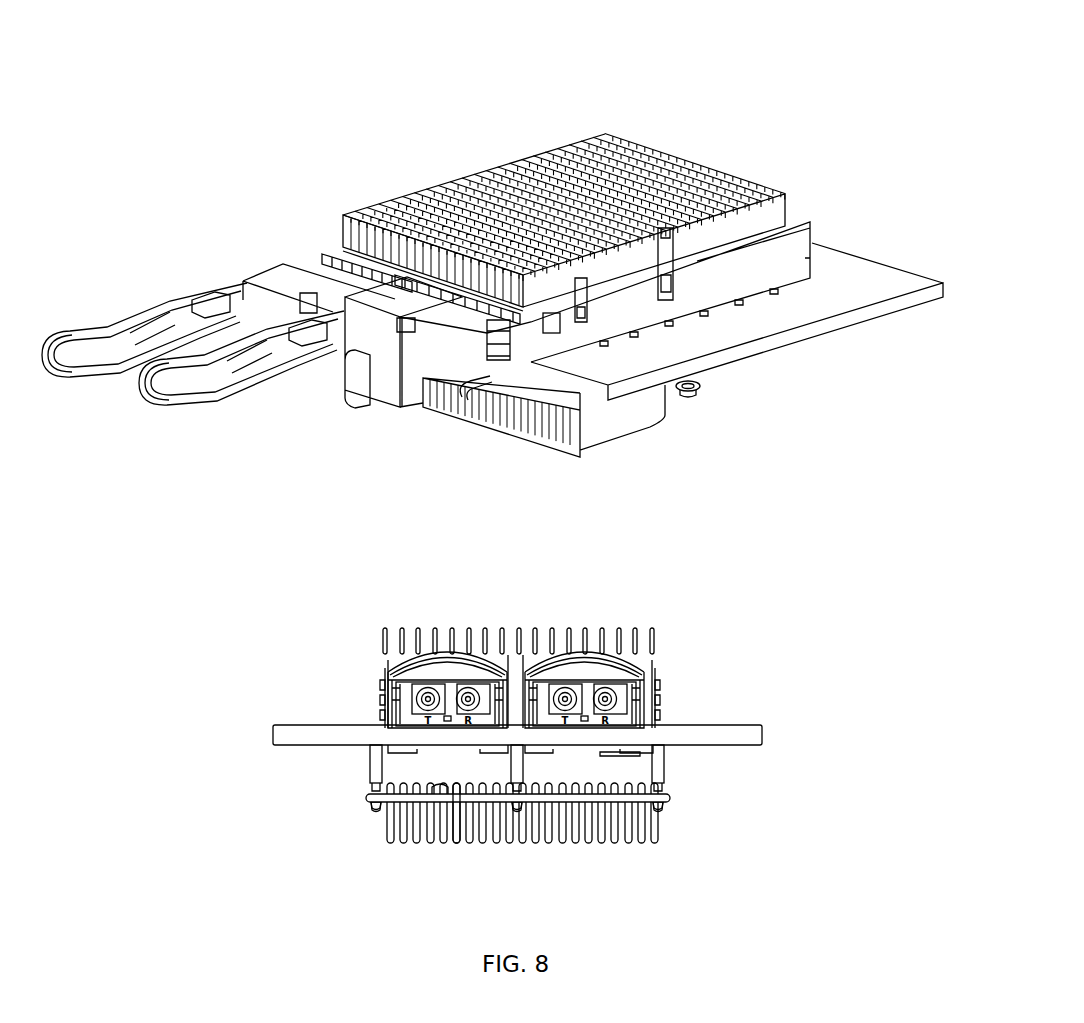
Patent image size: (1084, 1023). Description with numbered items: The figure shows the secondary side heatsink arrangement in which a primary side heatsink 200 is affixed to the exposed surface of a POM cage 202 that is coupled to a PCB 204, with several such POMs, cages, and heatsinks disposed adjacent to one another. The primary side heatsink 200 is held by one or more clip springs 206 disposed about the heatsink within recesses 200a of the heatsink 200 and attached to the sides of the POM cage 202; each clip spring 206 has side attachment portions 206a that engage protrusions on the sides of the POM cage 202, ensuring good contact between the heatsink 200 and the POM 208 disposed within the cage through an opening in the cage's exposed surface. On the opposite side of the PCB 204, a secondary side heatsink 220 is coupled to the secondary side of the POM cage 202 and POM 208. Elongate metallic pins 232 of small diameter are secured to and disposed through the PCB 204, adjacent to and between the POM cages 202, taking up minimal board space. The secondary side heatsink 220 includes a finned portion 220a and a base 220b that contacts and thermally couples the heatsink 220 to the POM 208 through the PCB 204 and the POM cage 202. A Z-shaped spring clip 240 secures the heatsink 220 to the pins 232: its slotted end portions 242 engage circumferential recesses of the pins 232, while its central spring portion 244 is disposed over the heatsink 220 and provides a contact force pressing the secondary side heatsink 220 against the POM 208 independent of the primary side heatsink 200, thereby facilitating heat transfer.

The primary side heatsink 200 is at (437, 180).
The recesses of the heatsink 200a is at (397, 200).
The POM cage 202 is at (803, 210).
The PCB 204 is at (867, 247).
The clip spring 206 is at (672, 243).
The side attachment portions 206a is at (680, 285).
The POM 208 is at (283, 263).
The secondary side heatsink 220 is at (485, 432).
The finned portion 220a is at (448, 415).
The base 220b is at (607, 758).
The pins 232 is at (362, 772).
The Z-shaped spring clip 240 is at (353, 803).
The slotted end portions 242 is at (708, 392).
The central spring portion 244 is at (448, 817).